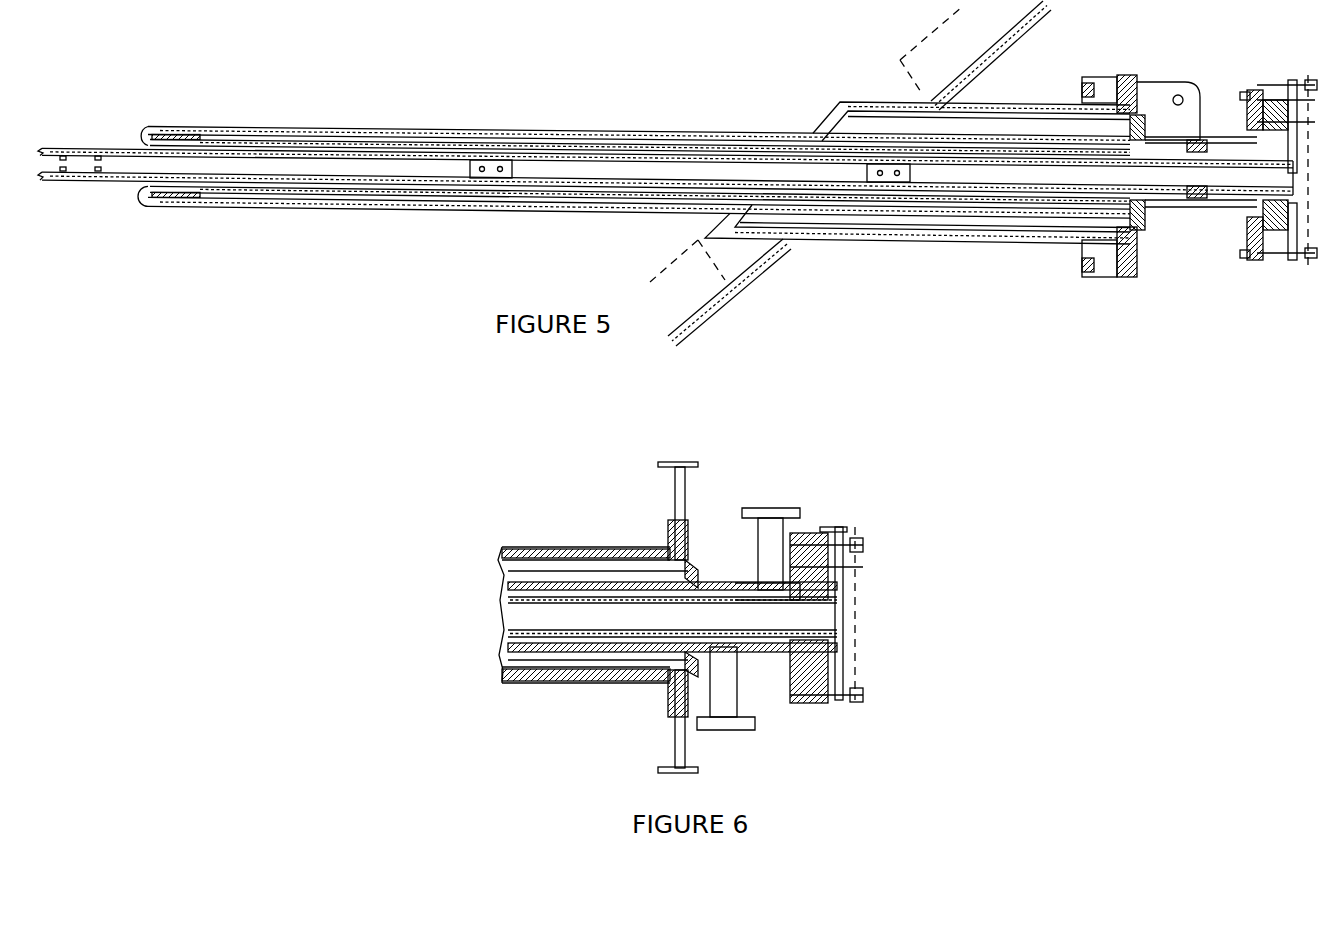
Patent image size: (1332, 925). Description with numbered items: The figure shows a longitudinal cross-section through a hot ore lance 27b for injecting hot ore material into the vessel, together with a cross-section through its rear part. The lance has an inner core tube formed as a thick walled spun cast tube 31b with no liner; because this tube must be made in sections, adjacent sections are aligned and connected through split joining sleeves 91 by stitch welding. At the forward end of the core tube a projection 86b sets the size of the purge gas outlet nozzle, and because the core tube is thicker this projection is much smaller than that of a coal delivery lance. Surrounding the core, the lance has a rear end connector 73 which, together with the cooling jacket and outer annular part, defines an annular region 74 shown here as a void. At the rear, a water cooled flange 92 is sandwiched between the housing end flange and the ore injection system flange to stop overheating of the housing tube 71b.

In FIG. 5, the hot ore lance 27b is at (395, 120).
In FIG. 5, the spun cast tube 31b is at (655, 161).
In FIG. 5, the projection 86b is at (158, 181).
In FIG. 5, the split joining sleeves 91 is at (493, 178).
In FIG. 5, the annular region 74 is at (986, 224).
In FIG. 5, the rear end connector 73 is at (1147, 224).
In FIG. 6, the rear end connector 73 is at (697, 562).
In FIG. 5, the housing tube 71b is at (1208, 220).
In FIG. 6, the housing tube 71b is at (767, 657).
In FIG. 6, the water cooled flange 92 is at (843, 588).